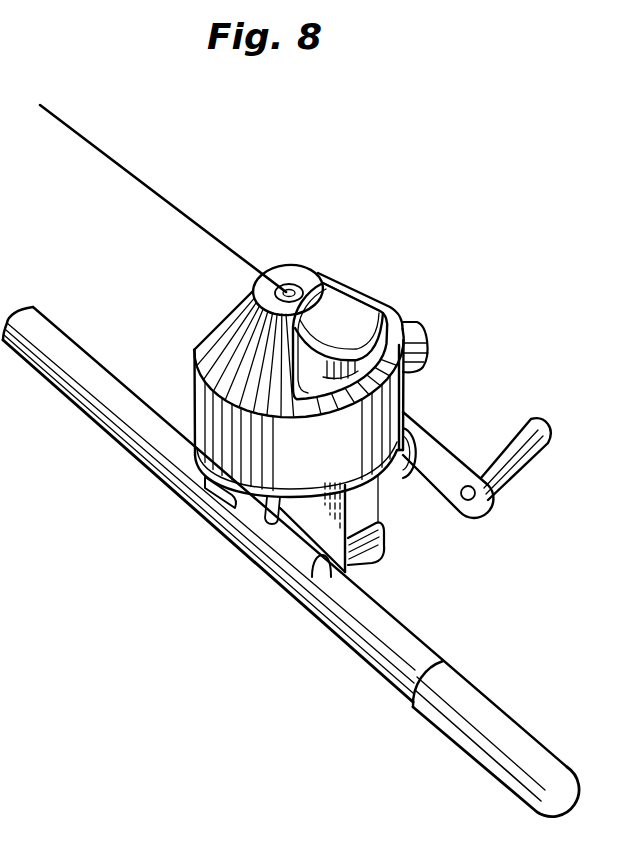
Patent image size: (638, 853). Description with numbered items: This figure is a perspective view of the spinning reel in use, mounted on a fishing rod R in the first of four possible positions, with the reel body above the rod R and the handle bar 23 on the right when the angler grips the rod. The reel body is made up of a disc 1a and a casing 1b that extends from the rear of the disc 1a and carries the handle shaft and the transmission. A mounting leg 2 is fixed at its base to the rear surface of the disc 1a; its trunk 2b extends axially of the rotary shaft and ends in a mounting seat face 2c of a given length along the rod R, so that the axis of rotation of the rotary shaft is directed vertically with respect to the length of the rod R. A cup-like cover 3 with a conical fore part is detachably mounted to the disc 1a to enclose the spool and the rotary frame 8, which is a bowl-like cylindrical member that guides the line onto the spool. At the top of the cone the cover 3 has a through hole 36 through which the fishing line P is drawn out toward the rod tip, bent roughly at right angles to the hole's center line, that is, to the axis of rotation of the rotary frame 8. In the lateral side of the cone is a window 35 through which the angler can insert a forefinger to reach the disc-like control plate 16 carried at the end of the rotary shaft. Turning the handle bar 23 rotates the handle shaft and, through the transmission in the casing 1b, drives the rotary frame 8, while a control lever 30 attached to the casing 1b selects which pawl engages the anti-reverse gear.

The fishing line P is at (193, 217).
The fishing rod R is at (408, 642).
The cover 3 is at (355, 290).
The through hole 36 is at (298, 288).
The control plate 16 is at (343, 327).
The rotary frame 8 is at (370, 338).
The window 35 is at (428, 350).
The disc 1a is at (435, 463).
The handle bar 23 is at (487, 433).
The casing 1b is at (367, 527).
The control lever 30 is at (385, 553).
The mounting leg 2 is at (290, 550).
The trunk 2b is at (250, 503).
The mounting seat face 2c is at (297, 577).